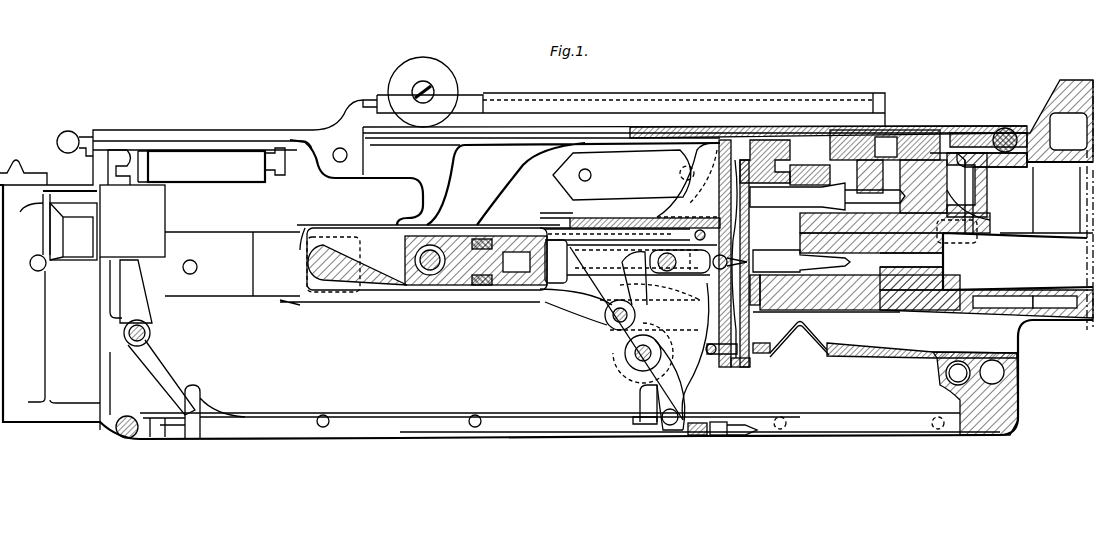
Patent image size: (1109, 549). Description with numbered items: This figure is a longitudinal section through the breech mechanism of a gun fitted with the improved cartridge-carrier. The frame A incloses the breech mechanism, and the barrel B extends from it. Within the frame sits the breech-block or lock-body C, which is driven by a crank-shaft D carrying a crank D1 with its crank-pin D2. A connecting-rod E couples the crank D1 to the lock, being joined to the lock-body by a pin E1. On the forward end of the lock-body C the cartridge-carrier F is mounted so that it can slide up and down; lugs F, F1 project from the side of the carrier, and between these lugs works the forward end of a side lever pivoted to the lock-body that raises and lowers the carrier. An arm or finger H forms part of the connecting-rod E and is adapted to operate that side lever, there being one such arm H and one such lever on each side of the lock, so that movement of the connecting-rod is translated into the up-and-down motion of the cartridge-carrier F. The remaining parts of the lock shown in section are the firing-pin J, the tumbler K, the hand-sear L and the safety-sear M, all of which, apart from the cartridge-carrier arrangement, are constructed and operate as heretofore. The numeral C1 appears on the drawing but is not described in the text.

The frame A is at (486, 433).
The barrel B is at (921, 224).
The breech-block or lock-body C is at (687, 180).
The hammer cam C1 is at (668, 356).
The crank-shaft D is at (330, 236).
The crank D1 is at (427, 259).
The crank-pin D2 is at (476, 260).
The connecting-rod E is at (631, 256).
The pin E1 is at (634, 272).
The cartridge-carrier F is at (752, 363).
The lug F1 is at (742, 165).
The arm or finger H is at (387, 349).
The firing-pin J is at (698, 261).
The tumbler K is at (611, 333).
The hand-sear L is at (640, 402).
The safety-sear M is at (612, 242).